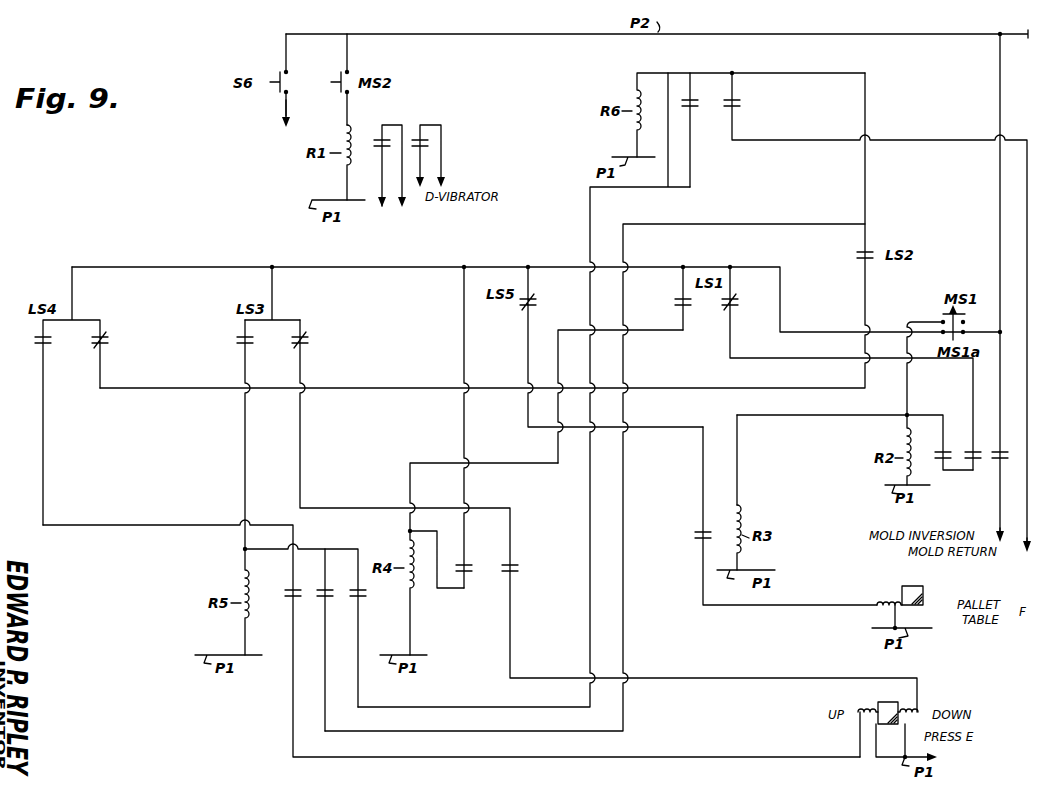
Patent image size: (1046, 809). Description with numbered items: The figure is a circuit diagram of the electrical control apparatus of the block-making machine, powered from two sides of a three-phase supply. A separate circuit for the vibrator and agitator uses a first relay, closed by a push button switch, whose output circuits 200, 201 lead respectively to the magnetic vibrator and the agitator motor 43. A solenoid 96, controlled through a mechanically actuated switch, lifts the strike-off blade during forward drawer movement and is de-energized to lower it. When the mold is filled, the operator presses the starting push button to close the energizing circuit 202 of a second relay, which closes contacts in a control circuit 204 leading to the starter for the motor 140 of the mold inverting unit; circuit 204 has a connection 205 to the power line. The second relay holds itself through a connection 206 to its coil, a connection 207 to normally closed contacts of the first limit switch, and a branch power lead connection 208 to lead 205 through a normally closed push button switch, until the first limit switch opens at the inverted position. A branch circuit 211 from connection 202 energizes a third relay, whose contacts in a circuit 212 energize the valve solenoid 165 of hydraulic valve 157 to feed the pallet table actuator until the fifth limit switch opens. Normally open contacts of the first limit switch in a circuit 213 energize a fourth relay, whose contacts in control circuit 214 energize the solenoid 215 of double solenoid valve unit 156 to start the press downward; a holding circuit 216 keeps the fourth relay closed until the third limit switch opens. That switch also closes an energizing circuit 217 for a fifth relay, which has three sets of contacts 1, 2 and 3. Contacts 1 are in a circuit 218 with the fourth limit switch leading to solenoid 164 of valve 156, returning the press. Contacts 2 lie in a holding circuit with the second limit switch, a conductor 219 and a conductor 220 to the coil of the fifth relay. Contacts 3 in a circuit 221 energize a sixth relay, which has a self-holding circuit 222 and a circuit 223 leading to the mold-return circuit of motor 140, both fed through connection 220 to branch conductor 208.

The contacts 1 is at (297, 601).
The contacts 2 is at (330, 601).
The contacts 3 is at (363, 601).
The agitator motor 43 is at (419, 214).
The solenoid 96 is at (282, 127).
The motor 140 is at (1010, 552).
The double solenoid valve unit 156 is at (897, 703).
The hydraulic valve 157 is at (930, 588).
The solenoid 164 is at (860, 705).
The valve solenoid 165 is at (877, 600).
The output circuit 200 is at (390, 126).
The output circuit 201 is at (440, 126).
The energizing circuit 202 is at (911, 388).
The control circuit 204 is at (998, 491).
The connection 205 is at (998, 103).
The connection 206 is at (910, 418).
The connection 207 is at (842, 361).
The branch power lead connection 208 is at (402, 266).
The branch circuit 211 is at (738, 469).
The circuit 212 is at (702, 484).
The circuit 213 is at (639, 338).
The control circuit 214 is at (382, 508).
The solenoid 215 is at (918, 706).
The holding circuit 216 is at (460, 434).
The energizing circuit 217 is at (243, 453).
The circuit 218 is at (178, 526).
The conductor 219 is at (764, 226).
The conductor 220 is at (866, 199).
The circuit 221 is at (659, 186).
The self-holding circuit 222 is at (691, 172).
The circuit 223 is at (957, 141).